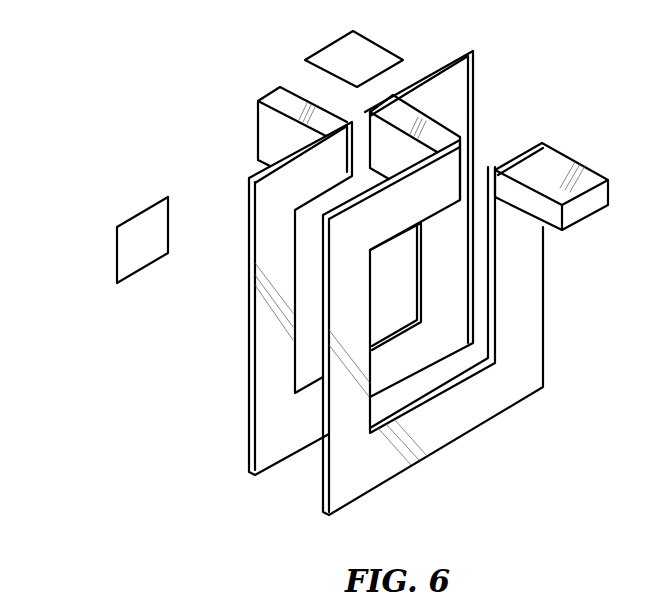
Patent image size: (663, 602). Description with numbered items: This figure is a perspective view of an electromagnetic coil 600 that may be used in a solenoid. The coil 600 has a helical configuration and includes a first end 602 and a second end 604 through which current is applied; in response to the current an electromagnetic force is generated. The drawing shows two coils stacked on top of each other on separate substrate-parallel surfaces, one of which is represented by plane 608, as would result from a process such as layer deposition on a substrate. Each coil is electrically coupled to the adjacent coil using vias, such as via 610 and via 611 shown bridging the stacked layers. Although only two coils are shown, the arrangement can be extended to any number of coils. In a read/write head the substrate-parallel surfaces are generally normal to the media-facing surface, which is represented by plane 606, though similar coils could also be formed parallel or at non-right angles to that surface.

The electromagnetic coil 600 is at (157, 458).
The first end 602 is at (260, 167).
The second end 604 is at (537, 143).
The plane representing media-facing surface 606 is at (335, 43).
The plane representing substrate-parallel surface 608 is at (116, 252).
The via 610 is at (258, 112).
The via 611 is at (430, 115).